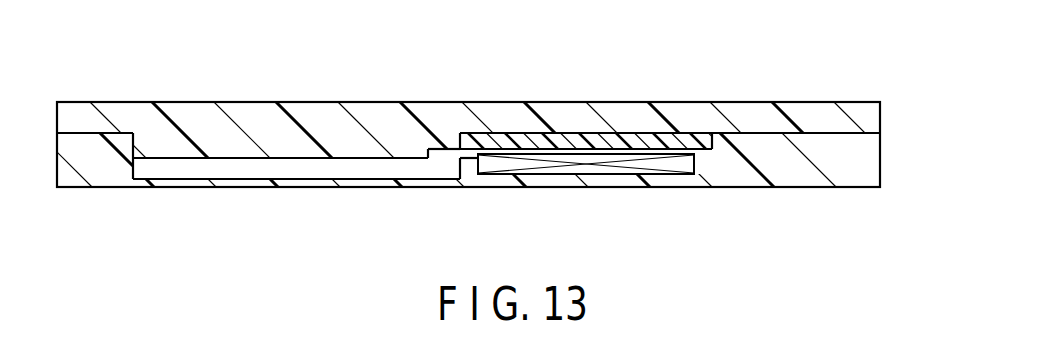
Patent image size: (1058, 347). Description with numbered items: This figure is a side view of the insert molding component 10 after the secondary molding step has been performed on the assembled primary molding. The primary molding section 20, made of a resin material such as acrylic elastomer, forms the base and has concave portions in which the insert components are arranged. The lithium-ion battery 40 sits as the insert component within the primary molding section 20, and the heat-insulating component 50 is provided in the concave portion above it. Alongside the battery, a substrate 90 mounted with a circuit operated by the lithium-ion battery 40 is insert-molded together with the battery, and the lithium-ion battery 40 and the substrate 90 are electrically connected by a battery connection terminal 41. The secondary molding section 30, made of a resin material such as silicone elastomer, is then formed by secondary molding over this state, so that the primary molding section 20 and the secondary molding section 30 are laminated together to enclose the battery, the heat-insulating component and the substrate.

The insert molding component 10 is at (318, 101).
The primary molding section 20 is at (876, 148).
The secondary molding section 30 is at (775, 117).
The lithium-ion battery 40 is at (642, 160).
The battery connection terminal 41 is at (445, 148).
The heat-insulating component 50 is at (563, 140).
The substrate 90 is at (400, 173).